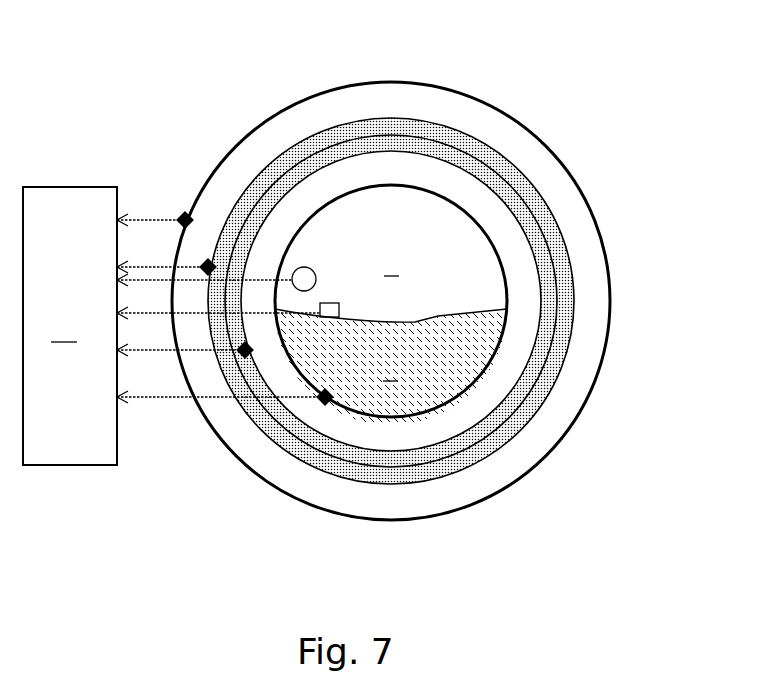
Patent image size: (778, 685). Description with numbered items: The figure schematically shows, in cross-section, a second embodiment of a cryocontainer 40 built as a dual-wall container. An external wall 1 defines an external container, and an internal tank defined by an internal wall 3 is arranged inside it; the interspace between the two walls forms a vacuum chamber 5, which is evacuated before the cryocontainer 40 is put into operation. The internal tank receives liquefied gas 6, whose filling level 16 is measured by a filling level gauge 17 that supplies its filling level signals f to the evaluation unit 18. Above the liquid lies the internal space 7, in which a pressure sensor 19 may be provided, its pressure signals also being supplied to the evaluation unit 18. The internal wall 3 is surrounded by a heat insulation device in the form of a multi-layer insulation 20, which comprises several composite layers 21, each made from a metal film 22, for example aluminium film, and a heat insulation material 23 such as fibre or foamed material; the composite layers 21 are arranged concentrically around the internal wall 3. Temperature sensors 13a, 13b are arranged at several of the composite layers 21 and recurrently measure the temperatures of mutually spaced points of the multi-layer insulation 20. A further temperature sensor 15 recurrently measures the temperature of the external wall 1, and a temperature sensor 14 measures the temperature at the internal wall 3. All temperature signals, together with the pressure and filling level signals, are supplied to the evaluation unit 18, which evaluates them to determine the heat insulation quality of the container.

The external wall 1 is at (549, 150).
The internal wall 3 is at (428, 190).
The vacuum chamber 5 is at (581, 233).
The liquefied gas 6 is at (392, 362).
The internal space 7 is at (392, 264).
The temperature sensor 13a is at (208, 262).
The temperature sensor 13b is at (243, 354).
The temperature sensor 14 is at (323, 400).
The temperature sensor 15 is at (184, 216).
The filling level 16 is at (438, 316).
The filling level gauge 17 is at (330, 303).
The evaluation unit 18 is at (174, 326).
The pressure sensor 19 is at (303, 267).
The multi-layer insulation 20 is at (548, 424).
The composite layers 21 is at (443, 452).
The metal film 22 is at (524, 399).
The heat insulation material 23 is at (537, 350).
The cryocontainer 40 is at (547, 79).